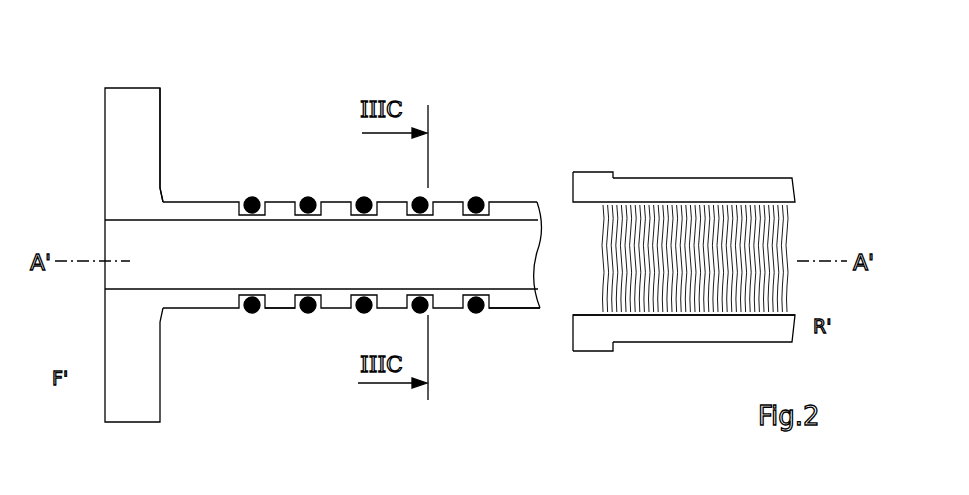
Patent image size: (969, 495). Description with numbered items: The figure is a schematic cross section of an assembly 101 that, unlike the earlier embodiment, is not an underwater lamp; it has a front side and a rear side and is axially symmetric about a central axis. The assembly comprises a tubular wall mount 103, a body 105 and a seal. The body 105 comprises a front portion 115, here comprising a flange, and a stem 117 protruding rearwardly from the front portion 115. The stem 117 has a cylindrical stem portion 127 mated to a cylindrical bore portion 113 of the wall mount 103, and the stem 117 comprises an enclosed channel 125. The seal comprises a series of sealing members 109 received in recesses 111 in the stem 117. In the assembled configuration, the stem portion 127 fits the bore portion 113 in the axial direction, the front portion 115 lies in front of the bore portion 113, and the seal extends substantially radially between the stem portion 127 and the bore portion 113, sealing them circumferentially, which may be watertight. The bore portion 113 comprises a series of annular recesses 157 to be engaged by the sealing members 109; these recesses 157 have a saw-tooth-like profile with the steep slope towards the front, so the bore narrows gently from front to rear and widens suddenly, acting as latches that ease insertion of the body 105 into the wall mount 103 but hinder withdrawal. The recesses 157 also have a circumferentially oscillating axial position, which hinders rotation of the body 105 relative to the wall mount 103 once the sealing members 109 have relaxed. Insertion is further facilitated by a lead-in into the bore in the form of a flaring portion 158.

The assembly 101 is at (463, 100).
The tubular wall mount 103 is at (668, 160).
The body 105 is at (126, 80).
The sealing members 109 is at (254, 198).
The recesses 111 is at (485, 200).
The cylindrical bore portion 113 is at (718, 313).
The front portion 115 is at (162, 120).
The stem 117 is at (507, 322).
The enclosed channel 125 is at (403, 268).
The cylindrical stem portion 127 is at (280, 310).
The recesses 157 is at (706, 225).
The flaring portion 158 is at (593, 182).